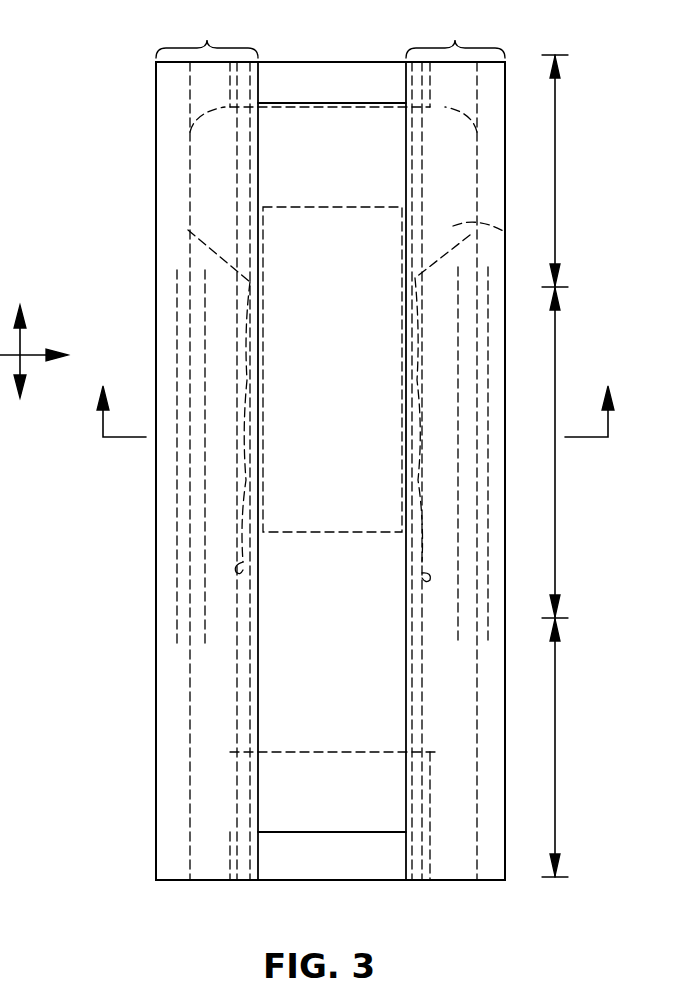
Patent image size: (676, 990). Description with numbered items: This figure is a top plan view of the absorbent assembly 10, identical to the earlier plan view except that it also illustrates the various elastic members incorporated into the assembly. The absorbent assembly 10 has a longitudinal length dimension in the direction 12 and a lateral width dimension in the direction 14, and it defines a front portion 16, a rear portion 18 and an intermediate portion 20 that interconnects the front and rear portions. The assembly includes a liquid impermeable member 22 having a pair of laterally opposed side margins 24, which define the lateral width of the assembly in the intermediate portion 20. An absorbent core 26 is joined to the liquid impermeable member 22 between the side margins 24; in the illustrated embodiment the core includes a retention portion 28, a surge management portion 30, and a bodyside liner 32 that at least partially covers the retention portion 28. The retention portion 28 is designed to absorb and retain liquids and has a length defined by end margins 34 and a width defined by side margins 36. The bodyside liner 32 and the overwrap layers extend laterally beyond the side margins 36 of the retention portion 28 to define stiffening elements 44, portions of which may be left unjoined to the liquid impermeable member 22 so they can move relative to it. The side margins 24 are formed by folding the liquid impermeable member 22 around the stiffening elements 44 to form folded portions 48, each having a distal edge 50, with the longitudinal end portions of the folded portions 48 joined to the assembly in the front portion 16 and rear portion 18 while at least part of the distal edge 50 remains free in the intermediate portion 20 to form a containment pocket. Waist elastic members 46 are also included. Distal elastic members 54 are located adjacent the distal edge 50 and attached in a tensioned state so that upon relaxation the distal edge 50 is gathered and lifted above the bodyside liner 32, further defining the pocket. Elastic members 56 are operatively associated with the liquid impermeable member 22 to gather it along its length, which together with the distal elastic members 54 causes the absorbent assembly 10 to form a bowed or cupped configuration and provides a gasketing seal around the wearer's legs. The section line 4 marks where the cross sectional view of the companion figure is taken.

The absorbent assembly 10 is at (112, 50).
The longitudinal direction 12 is at (26, 366).
The lateral direction 14 is at (32, 352).
The front portion 16 is at (557, 172).
The rear portion 18 is at (557, 715).
The intermediate portion 20 is at (557, 478).
The liquid impermeable member 22 is at (346, 809).
The laterally opposed side margins 24 is at (156, 554).
The absorbent core 26 is at (478, 174).
The retention portion 28 is at (481, 228).
The surge management portion 30 is at (337, 526).
The bodyside liner 32 is at (315, 154).
The end margins 34 is at (355, 108).
The side margins 36 is at (242, 568).
The stiffening elements 44 is at (212, 708).
The waist elastic members 46 is at (322, 70).
The folded portions 48 is at (207, 40).
The distal edge 50 is at (258, 662).
The distal elastic members 54 is at (236, 144).
The elastic members 56 is at (202, 280).
The section line 4- 4 is at (353, 430).